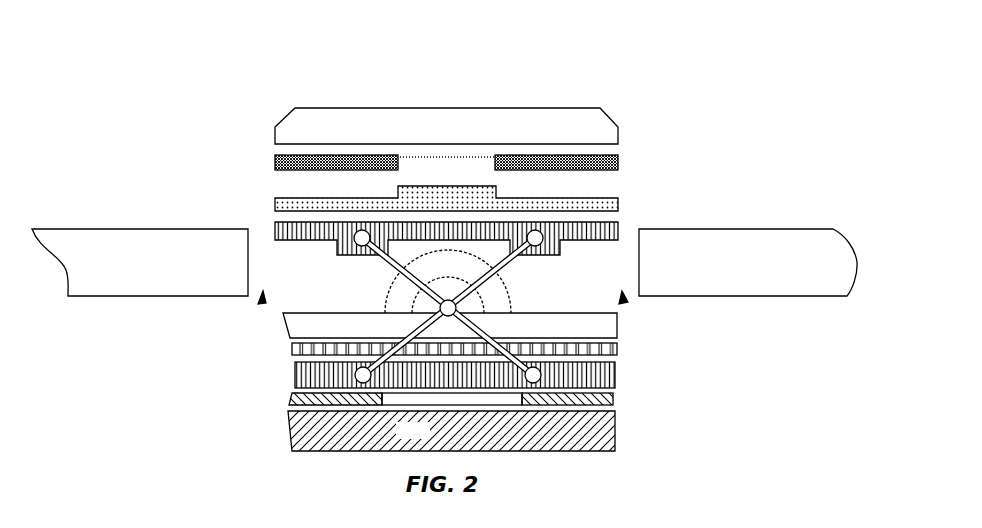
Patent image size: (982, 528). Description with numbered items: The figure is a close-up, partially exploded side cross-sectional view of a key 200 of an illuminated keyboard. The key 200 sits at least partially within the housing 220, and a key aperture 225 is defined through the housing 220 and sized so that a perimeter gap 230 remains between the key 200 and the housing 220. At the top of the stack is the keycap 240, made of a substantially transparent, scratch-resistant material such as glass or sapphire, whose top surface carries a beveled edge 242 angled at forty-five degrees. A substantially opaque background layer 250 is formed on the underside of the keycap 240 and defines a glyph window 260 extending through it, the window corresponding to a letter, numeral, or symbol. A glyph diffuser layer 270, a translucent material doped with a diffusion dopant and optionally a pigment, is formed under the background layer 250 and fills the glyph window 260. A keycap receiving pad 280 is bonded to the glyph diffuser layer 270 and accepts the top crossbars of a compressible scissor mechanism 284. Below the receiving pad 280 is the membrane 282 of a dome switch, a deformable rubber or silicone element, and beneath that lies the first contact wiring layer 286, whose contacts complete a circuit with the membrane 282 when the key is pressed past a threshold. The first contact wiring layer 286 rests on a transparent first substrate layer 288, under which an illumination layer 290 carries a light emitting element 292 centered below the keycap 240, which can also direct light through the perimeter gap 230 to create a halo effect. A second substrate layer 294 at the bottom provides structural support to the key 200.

The key 200 is at (165, 20).
The housing 220 is at (78, 228).
The key aperture 225 is at (258, 306).
The perimeter gap 230 is at (262, 222).
The keycap 240 is at (422, 111).
The beveled edge 242 is at (285, 117).
The background layer 250 is at (560, 171).
The glyph window 260 is at (495, 157).
The glyph diffuser layer 270 is at (615, 196).
The keycap receiving pad 280 is at (593, 242).
The membrane 282 is at (620, 330).
The scissor mechanism 284 is at (480, 304).
The first contact wiring layer 286 is at (293, 357).
The first substrate layer 288 is at (293, 380).
The illumination layer 290 is at (293, 398).
The light emitting element 292 is at (451, 431).
The second substrate layer 294 is at (452, 450).